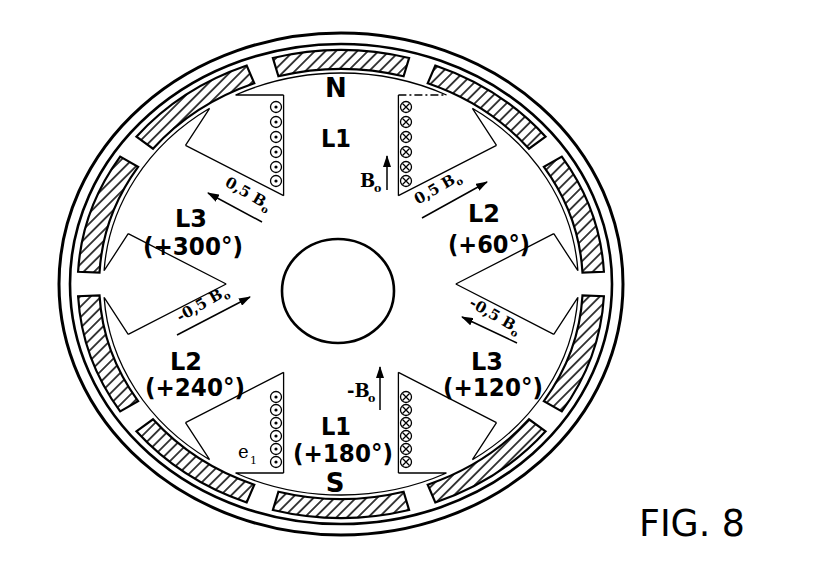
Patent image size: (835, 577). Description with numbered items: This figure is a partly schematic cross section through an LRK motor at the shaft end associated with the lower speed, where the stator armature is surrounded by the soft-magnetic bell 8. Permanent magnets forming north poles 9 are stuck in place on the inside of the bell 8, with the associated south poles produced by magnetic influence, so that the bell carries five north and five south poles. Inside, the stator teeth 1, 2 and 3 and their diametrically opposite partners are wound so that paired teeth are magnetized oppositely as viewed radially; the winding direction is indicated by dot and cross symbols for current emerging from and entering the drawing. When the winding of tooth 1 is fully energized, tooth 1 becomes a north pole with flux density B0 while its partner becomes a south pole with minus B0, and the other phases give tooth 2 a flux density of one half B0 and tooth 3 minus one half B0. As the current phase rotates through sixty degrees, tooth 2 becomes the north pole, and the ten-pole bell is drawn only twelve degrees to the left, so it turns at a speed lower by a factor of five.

The stator tooth 1 is at (374, 104).
The stator tooth 2 is at (507, 175).
The stator tooth 3 is at (538, 364).
The soft-magnetic bell 8 is at (524, 103).
The north poles 9 is at (288, 53).